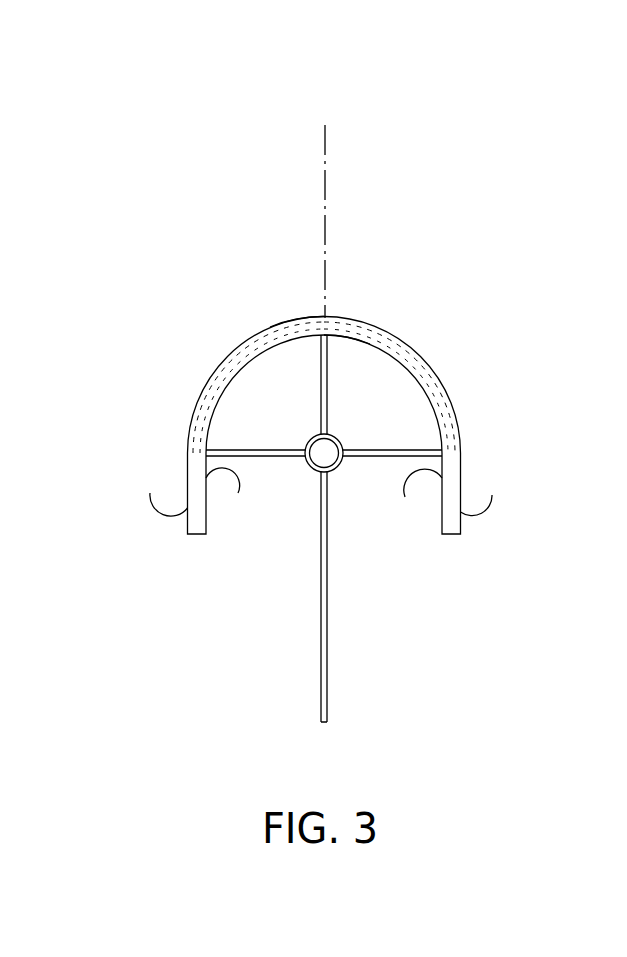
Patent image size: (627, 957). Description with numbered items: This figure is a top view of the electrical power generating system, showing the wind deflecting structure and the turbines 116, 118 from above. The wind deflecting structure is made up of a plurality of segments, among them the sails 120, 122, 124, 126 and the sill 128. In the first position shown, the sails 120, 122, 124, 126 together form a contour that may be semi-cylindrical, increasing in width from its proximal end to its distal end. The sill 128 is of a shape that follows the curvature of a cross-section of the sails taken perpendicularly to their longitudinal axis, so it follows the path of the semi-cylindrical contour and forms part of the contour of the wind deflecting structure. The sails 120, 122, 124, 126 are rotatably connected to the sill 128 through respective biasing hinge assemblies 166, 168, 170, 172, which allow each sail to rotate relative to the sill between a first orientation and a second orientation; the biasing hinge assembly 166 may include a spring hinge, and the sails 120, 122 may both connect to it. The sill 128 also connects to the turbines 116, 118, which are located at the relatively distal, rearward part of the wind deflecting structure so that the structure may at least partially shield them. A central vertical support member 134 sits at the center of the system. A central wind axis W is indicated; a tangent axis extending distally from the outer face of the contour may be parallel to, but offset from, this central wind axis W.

The central wind axis W is at (325, 145).
The turbine 116 is at (170, 515).
The turbine 118 is at (482, 517).
The sail 120 is at (270, 330).
The sail 122 is at (383, 332).
The sail 124 is at (210, 390).
The sail 126 is at (447, 403).
The sill 128 is at (452, 468).
The central vertical support member 134 is at (318, 457).
The biasing hinge assembly 166 is at (305, 318).
The biasing hinge assembly 168 is at (333, 332).
The biasing hinge assembly 170 is at (232, 353).
The biasing hinge assembly 172 is at (440, 362).